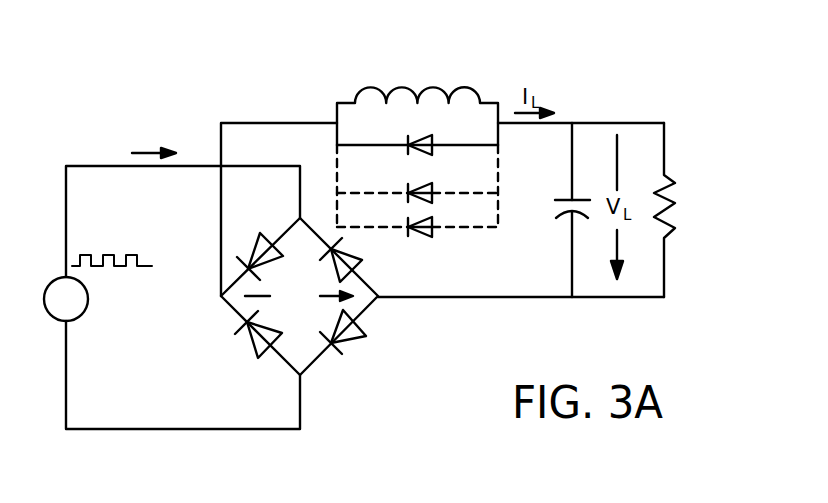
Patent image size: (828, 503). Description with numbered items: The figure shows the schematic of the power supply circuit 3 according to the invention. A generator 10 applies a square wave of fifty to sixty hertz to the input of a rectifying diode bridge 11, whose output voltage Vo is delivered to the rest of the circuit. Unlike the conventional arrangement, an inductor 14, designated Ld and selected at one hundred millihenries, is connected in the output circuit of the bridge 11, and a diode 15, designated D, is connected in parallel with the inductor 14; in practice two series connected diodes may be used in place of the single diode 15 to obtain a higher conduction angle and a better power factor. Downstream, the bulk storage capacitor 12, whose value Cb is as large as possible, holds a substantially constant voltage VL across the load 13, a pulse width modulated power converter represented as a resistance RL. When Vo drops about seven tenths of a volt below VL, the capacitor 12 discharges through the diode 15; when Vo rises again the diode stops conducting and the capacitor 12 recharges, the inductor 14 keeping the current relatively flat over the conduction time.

The circuit 3 is at (224, 100).
The generator 10 is at (84, 308).
The rectifying diode bridge 11 is at (360, 318).
The bulk storage capacitor 12 is at (565, 216).
The load 13 is at (673, 195).
The inductor 14 is at (463, 92).
The diode 15 is at (432, 225).